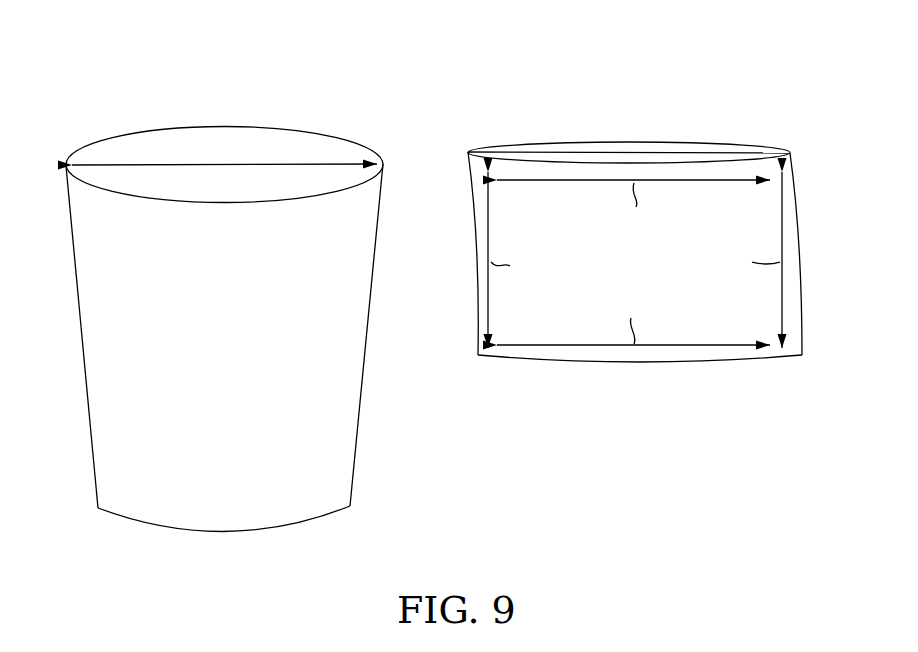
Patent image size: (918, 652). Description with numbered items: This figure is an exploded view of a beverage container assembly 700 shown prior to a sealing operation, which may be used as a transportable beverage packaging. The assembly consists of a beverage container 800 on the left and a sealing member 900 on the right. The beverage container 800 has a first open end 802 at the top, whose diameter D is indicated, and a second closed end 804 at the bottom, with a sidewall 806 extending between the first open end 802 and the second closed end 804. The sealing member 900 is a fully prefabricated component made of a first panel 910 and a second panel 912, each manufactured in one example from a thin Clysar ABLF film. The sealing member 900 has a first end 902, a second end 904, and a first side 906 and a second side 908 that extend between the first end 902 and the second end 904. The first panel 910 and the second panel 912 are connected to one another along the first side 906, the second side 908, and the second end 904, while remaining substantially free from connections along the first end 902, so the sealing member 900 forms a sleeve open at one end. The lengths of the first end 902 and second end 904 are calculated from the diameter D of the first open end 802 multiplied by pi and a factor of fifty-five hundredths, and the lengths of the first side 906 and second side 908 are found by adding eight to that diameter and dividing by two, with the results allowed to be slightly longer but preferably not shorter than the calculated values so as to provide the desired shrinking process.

The beverage container assembly 700 is at (194, 310).
The beverage container 800 is at (194, 329).
The first open end 802 is at (224, 108).
The second closed end 804 is at (221, 546).
The sidewall 806 is at (97, 338).
The sealing member 900 is at (637, 242).
The first end 902 is at (632, 374).
The second end 904 is at (629, 103).
The first side 906 is at (476, 257).
The second side 908 is at (839, 254).
The first panel 910 is at (792, 205).
The second panel 912 is at (741, 143).